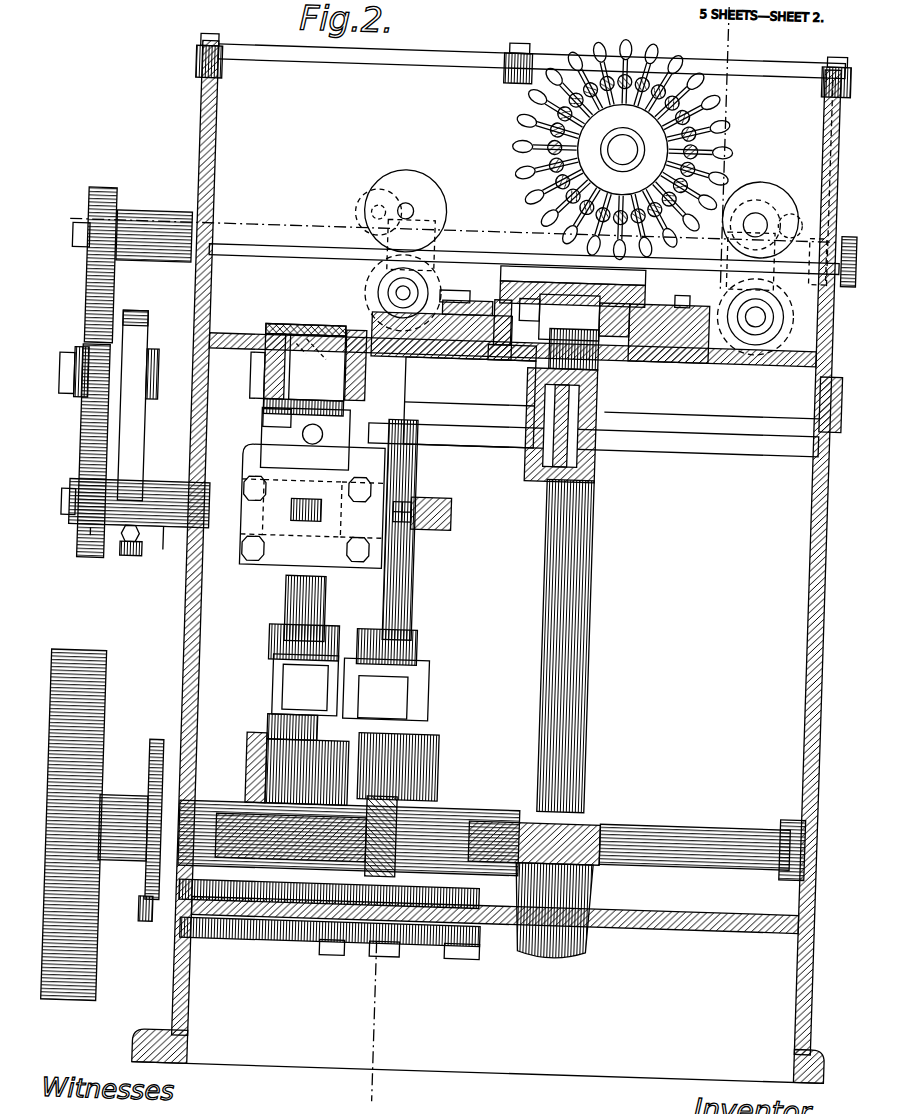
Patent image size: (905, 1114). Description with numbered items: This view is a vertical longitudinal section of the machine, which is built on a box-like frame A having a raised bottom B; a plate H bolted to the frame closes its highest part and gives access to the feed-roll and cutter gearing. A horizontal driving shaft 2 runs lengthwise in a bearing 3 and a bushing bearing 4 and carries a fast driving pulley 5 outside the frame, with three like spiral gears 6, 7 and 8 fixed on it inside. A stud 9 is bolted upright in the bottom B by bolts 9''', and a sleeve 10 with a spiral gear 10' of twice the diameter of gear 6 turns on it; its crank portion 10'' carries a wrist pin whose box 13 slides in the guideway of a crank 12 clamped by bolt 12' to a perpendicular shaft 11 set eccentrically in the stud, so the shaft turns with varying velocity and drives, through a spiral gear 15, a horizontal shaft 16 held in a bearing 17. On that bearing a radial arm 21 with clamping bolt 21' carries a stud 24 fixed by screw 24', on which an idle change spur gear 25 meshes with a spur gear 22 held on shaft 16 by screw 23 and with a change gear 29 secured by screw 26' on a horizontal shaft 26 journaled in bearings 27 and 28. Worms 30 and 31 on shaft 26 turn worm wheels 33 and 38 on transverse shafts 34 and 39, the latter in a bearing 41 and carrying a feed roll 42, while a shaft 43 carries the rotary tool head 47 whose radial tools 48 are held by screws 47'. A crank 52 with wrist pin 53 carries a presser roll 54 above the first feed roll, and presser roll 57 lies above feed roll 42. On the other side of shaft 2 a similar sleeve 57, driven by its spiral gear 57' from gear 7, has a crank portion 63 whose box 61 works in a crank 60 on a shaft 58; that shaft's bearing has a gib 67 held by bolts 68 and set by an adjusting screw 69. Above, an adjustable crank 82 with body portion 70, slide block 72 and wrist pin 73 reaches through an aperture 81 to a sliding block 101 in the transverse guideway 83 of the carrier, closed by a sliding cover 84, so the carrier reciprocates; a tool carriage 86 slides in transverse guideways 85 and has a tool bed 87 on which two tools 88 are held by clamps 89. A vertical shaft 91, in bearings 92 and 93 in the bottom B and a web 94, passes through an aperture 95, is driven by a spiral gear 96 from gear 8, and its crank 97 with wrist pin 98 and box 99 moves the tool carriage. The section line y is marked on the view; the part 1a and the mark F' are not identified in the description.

The driving shaft 2 is at (695, 820).
The bearing 3 is at (792, 812).
The bushing bearing 4 is at (190, 828).
The fast driving pulley 5 is at (74, 825).
The spiral gear 6 is at (405, 810).
The spiral gear 7 is at (260, 846).
The spiral gear 8 is at (560, 803).
The stud 9 is at (399, 958).
The machine screws or bolts 9''' is at (481, 968).
The sleeve 10 is at (416, 754).
The spiral gear 10' is at (473, 803).
The crank portion 10'' is at (461, 747).
The perpendicular shaft 11 is at (414, 612).
The crank 12 is at (407, 648).
The clamping bolt 12' is at (436, 682).
The box 13 is at (386, 689).
The spiral gear 15 is at (448, 505).
The horizontal shaft 16 is at (218, 540).
The bearing 17 is at (162, 560).
The radial arm 21 is at (147, 406).
The clamping bolt 21' is at (117, 562).
The spur gear 22 is at (90, 548).
The securing screw 23 is at (68, 540).
The stud 24 is at (161, 355).
The securing screw 24' is at (72, 353).
The idle change spur gear 25 is at (80, 445).
The horizontal shaft 26 is at (455, 229).
The securing screw 26' is at (75, 253).
The bearing 27 is at (140, 222).
The bearing 28 is at (835, 230).
The change gear 29 is at (96, 200).
The worm 30 is at (370, 288).
The worm 31 is at (752, 232).
The worm wheel 33 is at (447, 292).
The horizontal shaft 34 is at (388, 296).
The worm wheel 38 is at (776, 300).
The horizontal shaft 39 is at (705, 285).
The bearing 41 is at (770, 312).
The feed roll 42 is at (734, 357).
The horizontal shaft 43 is at (610, 150).
The rotary tool head 47 is at (622, 149).
The screws 47' is at (734, 121).
The radially directed tools 48 is at (520, 150).
The crank 52 is at (350, 206).
The wrist pin 53 is at (400, 213).
The presser roll 54 is at (405, 178).
The sleeve 57 is at (774, 222).
The spiral gear 57' is at (235, 767).
The shaft 58 is at (287, 606).
The crank 60 is at (272, 660).
The box 61 is at (305, 685).
The crank portion 63 is at (290, 746).
The gib 67 is at (325, 545).
The bolts 68 is at (253, 508).
The adjusting screw 69 is at (412, 528).
The body portion 70 is at (245, 460).
The slide block 72 is at (320, 438).
The wrist pin 73 is at (304, 375).
The aperture 81 is at (360, 380).
The adjustable crank 82 is at (305, 438).
The guideway 83 is at (335, 341).
The sliding cover 84 is at (300, 331).
The transverse guideways 85 is at (672, 357).
The tool carriage 86 is at (673, 291).
The tool bed 87 is at (490, 290).
The tools 88 is at (540, 250).
The clamps 89 is at (570, 313).
The vertical shaft 91 is at (548, 622).
The bearing 92 is at (590, 942).
The bearing 93 is at (594, 462).
The web 94 is at (545, 470).
The aperture 95 is at (630, 330).
The spiral gear 96 is at (625, 822).
The crank 97 is at (532, 362).
The wrist pin 98 is at (512, 348).
The box 99 is at (590, 318).
The sliding block 101 is at (285, 365).
The lug 1a is at (529, 310).
The frame A is at (810, 538).
The bottom B is at (708, 920).
The plate H is at (405, 62).
The bar F' is at (277, 223).
The section line y- y is at (556, 556).